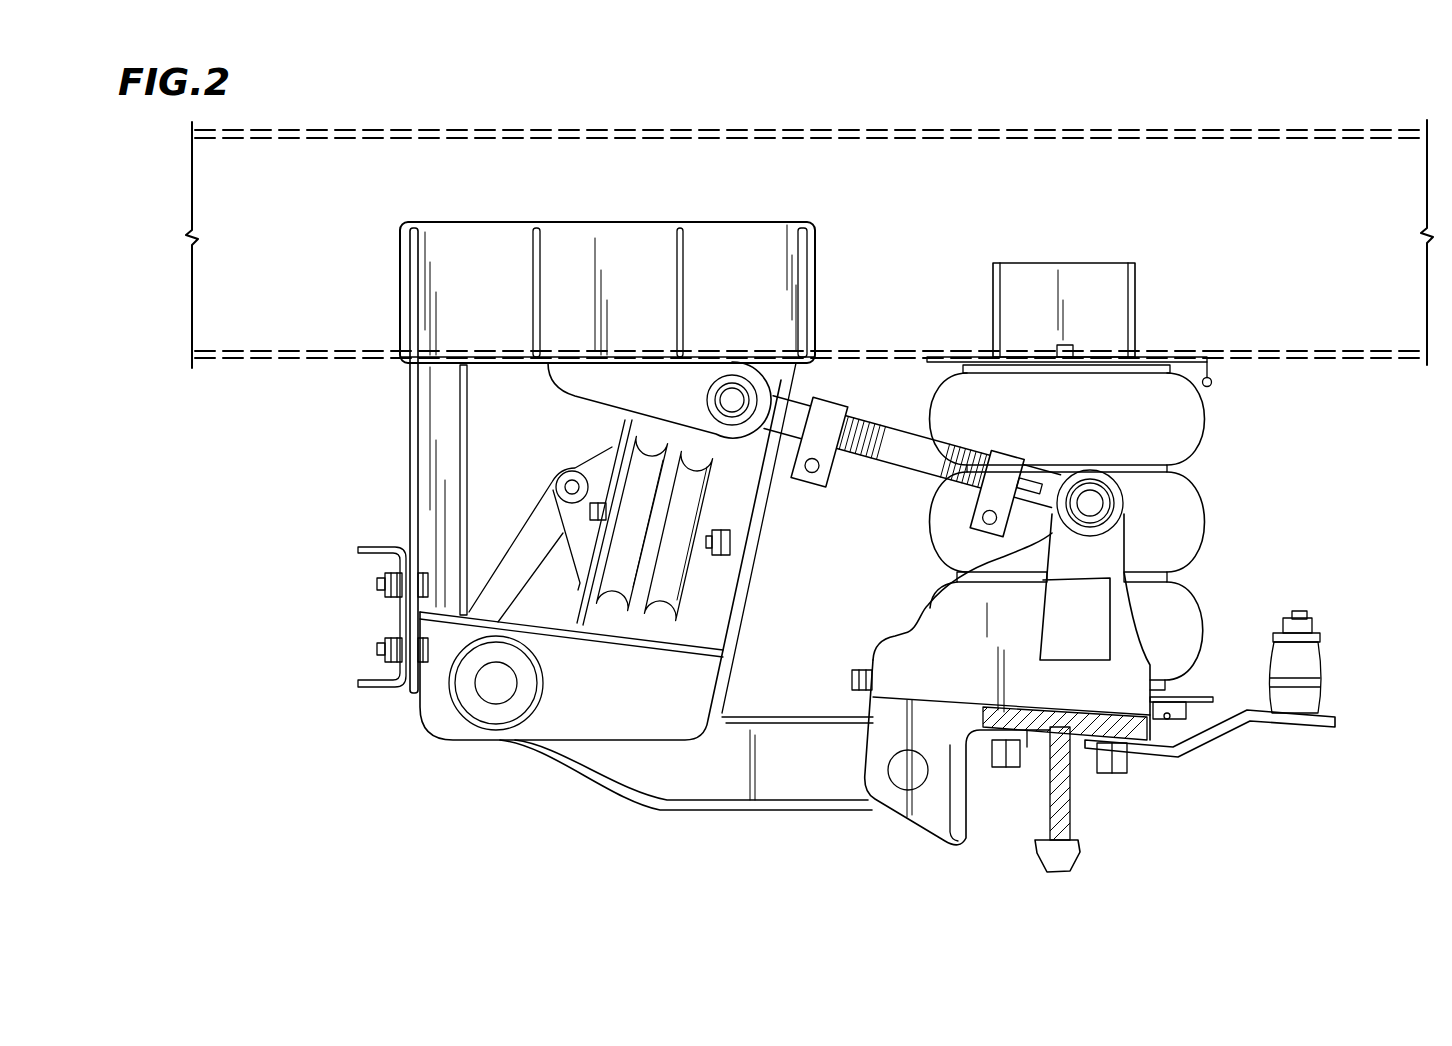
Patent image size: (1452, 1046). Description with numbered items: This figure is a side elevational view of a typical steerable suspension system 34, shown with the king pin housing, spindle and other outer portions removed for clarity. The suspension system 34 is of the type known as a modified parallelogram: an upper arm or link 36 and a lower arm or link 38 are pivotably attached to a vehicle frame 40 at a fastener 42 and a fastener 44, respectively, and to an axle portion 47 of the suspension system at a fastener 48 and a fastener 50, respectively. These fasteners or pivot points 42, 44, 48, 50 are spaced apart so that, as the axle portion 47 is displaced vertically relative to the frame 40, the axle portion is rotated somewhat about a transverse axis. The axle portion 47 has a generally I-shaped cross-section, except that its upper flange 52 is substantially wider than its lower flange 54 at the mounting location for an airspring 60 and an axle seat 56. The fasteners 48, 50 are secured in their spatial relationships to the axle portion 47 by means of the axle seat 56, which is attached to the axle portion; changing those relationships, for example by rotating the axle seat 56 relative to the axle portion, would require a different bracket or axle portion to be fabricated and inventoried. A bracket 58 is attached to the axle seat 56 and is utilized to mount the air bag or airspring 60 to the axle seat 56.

The steerable suspension system 34 is at (593, 842).
The upper arm or link 36 is at (913, 469).
The lower arm or link 38 is at (770, 812).
The vehicle frame 40 is at (287, 357).
The fastener 42 is at (728, 376).
The fastener 44 is at (494, 705).
The axle portion 47 is at (1036, 860).
The fastener 48 is at (1112, 508).
The fastener 50 is at (905, 786).
The upper flange 52 is at (1183, 748).
The lower flange 54 is at (1080, 855).
The axle seat 56 is at (900, 632).
The bracket 58 is at (850, 679).
The airspring 60 is at (1190, 607).